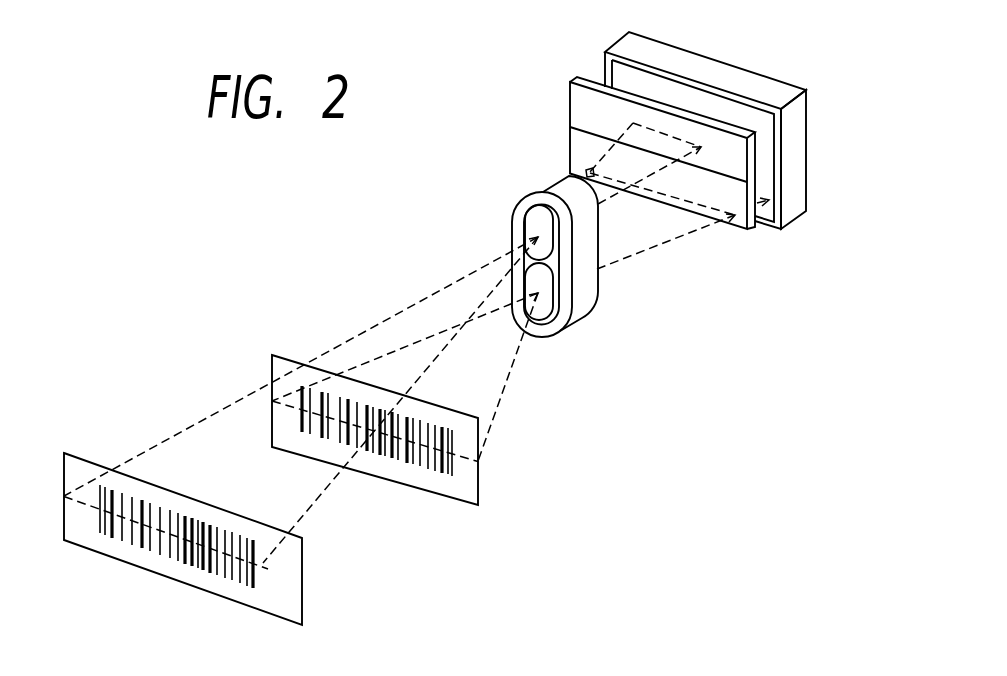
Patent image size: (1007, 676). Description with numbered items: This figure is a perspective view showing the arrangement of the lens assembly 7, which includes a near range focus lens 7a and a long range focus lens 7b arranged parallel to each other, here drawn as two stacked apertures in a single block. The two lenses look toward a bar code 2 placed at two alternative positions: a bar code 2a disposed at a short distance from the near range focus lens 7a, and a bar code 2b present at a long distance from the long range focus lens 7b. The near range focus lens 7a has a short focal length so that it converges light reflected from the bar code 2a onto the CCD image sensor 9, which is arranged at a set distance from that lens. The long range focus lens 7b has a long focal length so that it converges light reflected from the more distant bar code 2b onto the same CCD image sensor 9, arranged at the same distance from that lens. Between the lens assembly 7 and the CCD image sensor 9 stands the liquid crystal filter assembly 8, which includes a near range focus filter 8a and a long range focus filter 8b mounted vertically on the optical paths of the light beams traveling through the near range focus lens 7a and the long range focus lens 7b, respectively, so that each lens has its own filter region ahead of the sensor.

The bar code 2 is at (319, 501).
The bar code at short distance 2a is at (470, 490).
The bar code at long distance 2b is at (292, 592).
The lens assembly 7 is at (552, 178).
The near range focus lens 7a is at (546, 313).
The long range focus lens 7b is at (535, 218).
The liquid crystal filter assembly 8 is at (569, 100).
The near range focus filter 8a is at (737, 202).
The long range focus filter 8b is at (733, 167).
The CCD image sensor 9 is at (763, 86).